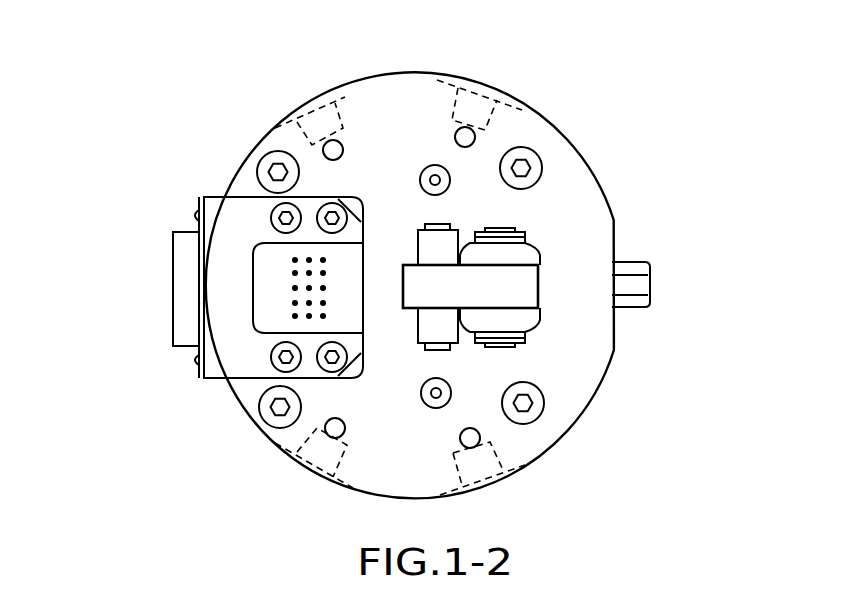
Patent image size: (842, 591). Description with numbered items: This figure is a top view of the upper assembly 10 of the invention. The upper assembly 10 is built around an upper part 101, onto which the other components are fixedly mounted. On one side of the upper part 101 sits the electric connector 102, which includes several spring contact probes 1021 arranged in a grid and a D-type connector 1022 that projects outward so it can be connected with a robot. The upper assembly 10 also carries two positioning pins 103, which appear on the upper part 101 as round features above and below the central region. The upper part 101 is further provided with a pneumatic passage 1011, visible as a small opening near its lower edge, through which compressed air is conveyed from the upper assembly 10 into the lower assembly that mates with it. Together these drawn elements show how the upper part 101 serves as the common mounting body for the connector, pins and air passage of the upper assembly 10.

The upper assembly 10 is at (600, 186).
The upper part 101 is at (580, 347).
The pneumatic passage 1011 is at (478, 435).
The electric connector 102 is at (223, 357).
The spring contact probes 1021 is at (295, 319).
The D-type connector 1022 is at (182, 287).
The positioning pins 103 is at (435, 165).